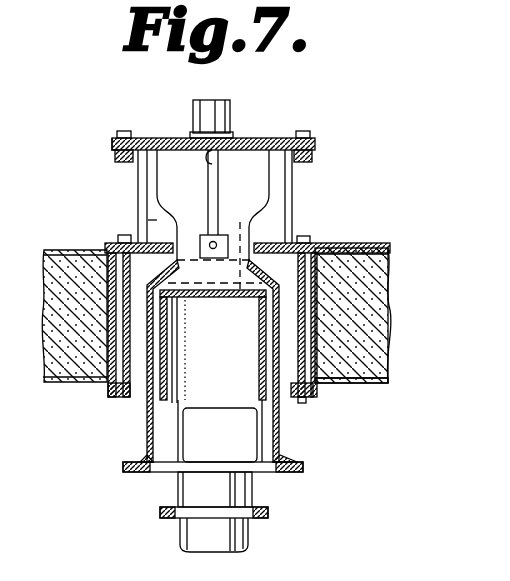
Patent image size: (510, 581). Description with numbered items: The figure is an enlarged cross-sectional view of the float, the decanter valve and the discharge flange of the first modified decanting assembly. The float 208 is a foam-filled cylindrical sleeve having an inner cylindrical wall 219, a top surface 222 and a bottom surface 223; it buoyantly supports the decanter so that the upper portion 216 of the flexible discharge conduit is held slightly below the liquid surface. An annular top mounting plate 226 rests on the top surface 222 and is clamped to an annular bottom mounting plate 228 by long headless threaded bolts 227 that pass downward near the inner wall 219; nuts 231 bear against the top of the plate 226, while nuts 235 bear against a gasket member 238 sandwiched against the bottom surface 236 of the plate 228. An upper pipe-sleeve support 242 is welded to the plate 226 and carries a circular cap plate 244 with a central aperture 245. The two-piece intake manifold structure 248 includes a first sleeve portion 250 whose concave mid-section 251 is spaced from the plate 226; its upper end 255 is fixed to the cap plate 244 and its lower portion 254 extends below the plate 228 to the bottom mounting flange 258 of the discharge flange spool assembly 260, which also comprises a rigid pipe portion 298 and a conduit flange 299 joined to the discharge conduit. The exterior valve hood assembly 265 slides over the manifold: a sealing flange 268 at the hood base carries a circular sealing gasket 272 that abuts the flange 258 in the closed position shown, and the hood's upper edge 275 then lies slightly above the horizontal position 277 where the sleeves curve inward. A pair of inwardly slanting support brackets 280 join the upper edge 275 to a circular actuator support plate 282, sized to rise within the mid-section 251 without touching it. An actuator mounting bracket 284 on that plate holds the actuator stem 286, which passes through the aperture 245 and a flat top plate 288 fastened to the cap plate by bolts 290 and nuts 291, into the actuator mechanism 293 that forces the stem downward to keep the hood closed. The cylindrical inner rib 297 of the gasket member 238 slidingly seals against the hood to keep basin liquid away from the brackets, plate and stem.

The float 208 is at (391, 311).
The upper portion 216 is at (182, 533).
The inner cylindrical wall 219 is at (108, 318).
The top surface 222 is at (52, 245).
The bottom surface 223 is at (381, 385).
The top mounting plate 226 is at (73, 302).
The bolts 227 is at (311, 306).
The bottom mounting plate 228 is at (313, 388).
The nuts 231 is at (304, 238).
The nuts 235 is at (292, 403).
The bottom surface 236 is at (109, 393).
The gasket member 238 is at (306, 401).
The upper pipe-sleeve support 242 is at (138, 197).
The cap plate 244 is at (112, 150).
The central aperture 245 is at (208, 161).
The intake manifold structure 248 is at (158, 220).
The first sleeve portion 250 is at (173, 355).
The mid-section 251 is at (169, 212).
The lower portion 254 is at (183, 418).
The upper end 255 is at (264, 153).
The bottom mounting flange 258 is at (303, 471).
The discharge flange spool assembly 260 is at (168, 496).
The exterior valve hood assembly 265 is at (97, 421).
The sealing flange 268 is at (293, 459).
The sealing gasket 272 is at (147, 458).
The upper edge 275 is at (178, 295).
The horizontal position 277 is at (248, 300).
The support brackets 280 is at (320, 265).
The actuator support plate 282 is at (240, 222).
The actuator mounting bracket 284 is at (205, 235).
The actuator stem 286 is at (219, 178).
The top plate 288 is at (118, 142).
The bolts 290 is at (305, 133).
The nuts 291 is at (117, 156).
The actuator mechanism 293 is at (231, 112).
The inner rib 297 is at (266, 390).
The rigid pipe portion 298 is at (253, 494).
The conduit flange 299 is at (270, 518).